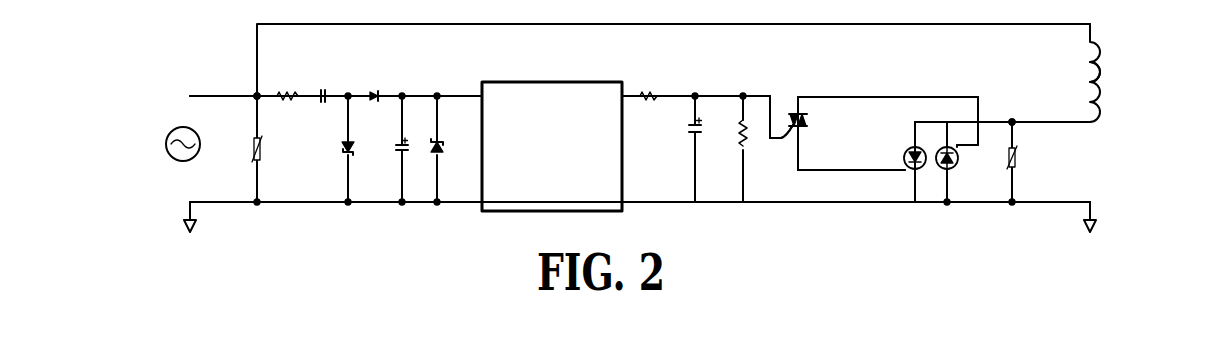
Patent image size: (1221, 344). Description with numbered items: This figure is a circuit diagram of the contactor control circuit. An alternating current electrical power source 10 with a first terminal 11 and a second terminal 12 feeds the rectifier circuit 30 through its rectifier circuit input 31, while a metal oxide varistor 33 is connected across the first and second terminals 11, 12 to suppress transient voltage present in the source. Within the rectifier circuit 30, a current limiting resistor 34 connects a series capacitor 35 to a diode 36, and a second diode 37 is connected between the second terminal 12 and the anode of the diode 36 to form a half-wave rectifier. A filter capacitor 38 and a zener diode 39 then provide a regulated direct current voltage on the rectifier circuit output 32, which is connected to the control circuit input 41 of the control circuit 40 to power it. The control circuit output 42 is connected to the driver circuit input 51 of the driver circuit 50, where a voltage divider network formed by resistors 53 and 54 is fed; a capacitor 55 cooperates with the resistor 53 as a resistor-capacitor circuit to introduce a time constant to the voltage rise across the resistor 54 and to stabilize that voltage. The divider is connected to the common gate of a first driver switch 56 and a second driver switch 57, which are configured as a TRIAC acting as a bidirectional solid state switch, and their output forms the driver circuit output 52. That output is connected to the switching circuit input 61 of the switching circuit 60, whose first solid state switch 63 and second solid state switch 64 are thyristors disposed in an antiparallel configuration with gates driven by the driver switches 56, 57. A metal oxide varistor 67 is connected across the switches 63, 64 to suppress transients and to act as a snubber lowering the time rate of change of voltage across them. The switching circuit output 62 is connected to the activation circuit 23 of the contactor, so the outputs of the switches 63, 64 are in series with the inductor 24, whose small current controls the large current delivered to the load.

The alternating current electrical power source 10 is at (175, 157).
The first terminal 11 is at (190, 95).
The second terminal 12 is at (196, 208).
The activation circuit 23 is at (1103, 83).
The inductor 24 is at (1102, 62).
The rectifier circuit 30 is at (335, 93).
The rectifier circuit input 31 is at (253, 100).
The rectifier circuit output 32 is at (480, 103).
The metal oxide varistor 33 is at (256, 156).
The current limiting resistor 34 is at (285, 102).
The series capacitor 35 is at (324, 104).
The diode 36 is at (378, 100).
The diode 37 is at (345, 157).
The filter capacitor 38 is at (398, 152).
The zener diode 39 is at (433, 152).
The control circuit 40 is at (557, 82).
The control circuit input 41 is at (481, 93).
The control circuit output 42 is at (624, 93).
The driver circuit 50 is at (708, 93).
The driver circuit input 51 is at (625, 102).
The driver circuit output 52 is at (847, 97).
The resistor 53 is at (657, 101).
The resistor 54 is at (740, 143).
The capacitor 55 is at (692, 134).
The first driver switch 56 is at (795, 124).
The second driver switch 57 is at (810, 122).
The switching circuit 60 is at (945, 92).
The switching circuit input 61 is at (862, 97).
The switching circuit output 62 is at (1013, 122).
The first solid state switch 63 is at (904, 160).
The second solid state switch 64 is at (958, 164).
The metal oxide varistor 67 is at (1017, 161).